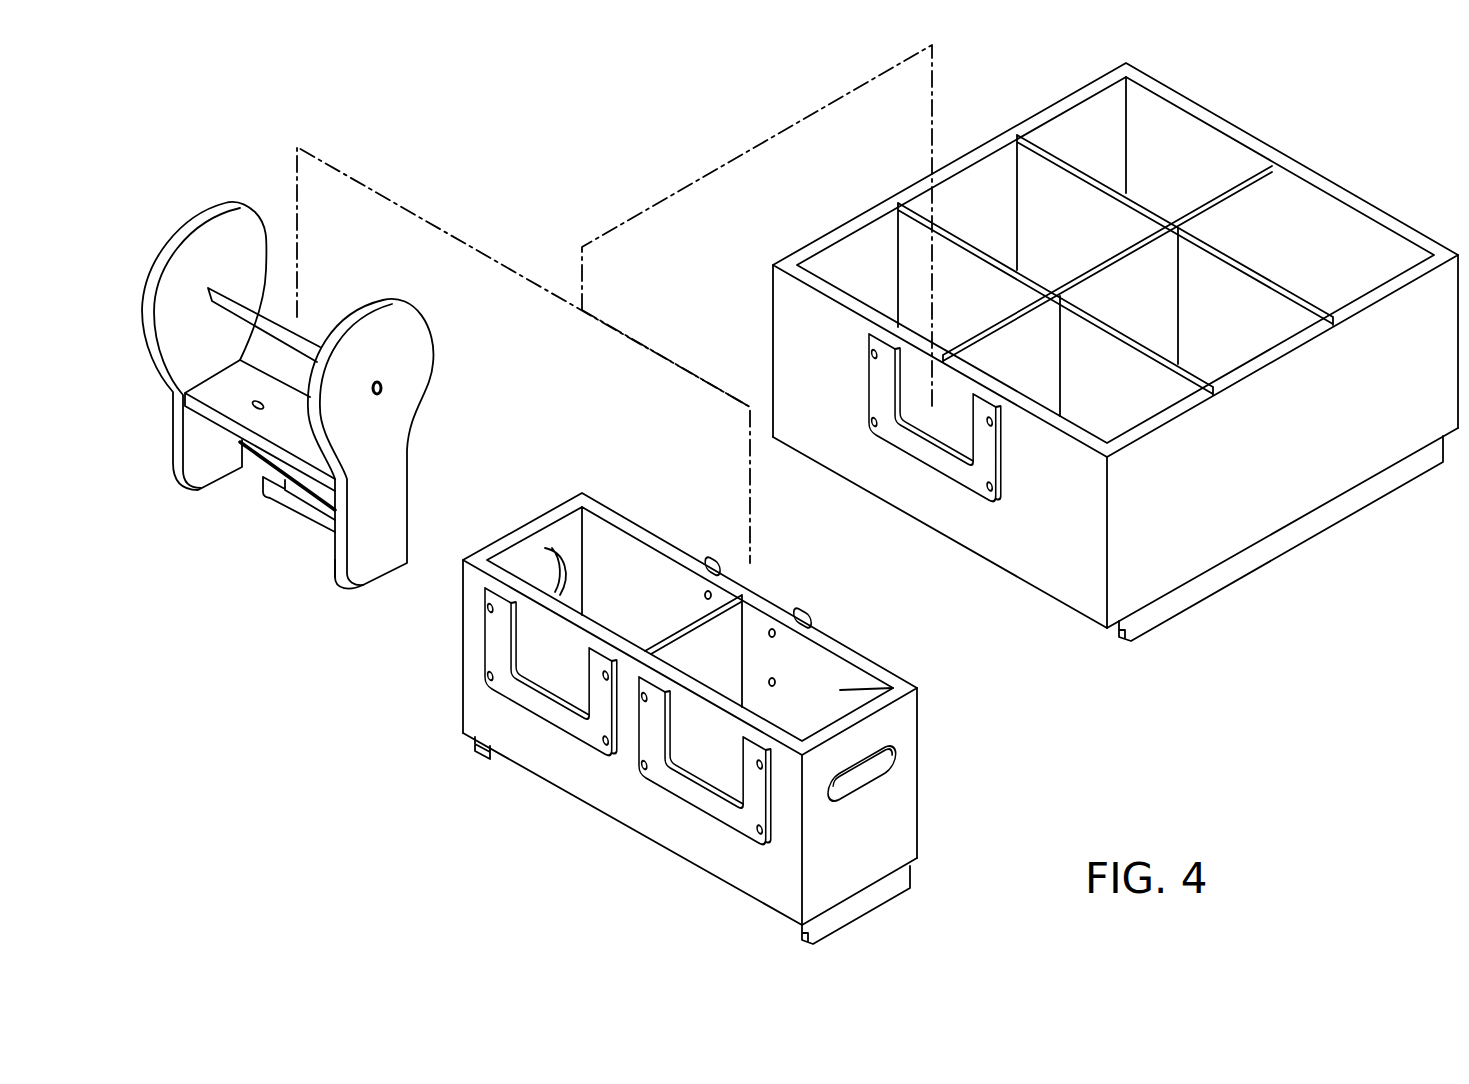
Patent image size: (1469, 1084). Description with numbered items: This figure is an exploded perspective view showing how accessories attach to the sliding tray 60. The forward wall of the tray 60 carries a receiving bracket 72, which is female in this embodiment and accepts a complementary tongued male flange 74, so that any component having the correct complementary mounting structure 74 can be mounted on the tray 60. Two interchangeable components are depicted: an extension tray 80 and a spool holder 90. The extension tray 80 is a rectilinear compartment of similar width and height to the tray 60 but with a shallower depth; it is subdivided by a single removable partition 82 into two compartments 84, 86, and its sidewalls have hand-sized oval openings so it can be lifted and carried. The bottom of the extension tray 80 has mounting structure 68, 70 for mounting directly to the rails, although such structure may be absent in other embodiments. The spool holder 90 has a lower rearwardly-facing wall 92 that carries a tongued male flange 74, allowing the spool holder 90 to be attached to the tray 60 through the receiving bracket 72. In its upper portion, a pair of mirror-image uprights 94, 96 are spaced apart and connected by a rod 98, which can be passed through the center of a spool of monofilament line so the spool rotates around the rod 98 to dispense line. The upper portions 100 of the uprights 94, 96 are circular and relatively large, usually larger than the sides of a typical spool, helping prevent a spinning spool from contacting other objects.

The tray 60 is at (1316, 160).
The mounting structure 68 is at (472, 743).
The mounting structure 70 is at (1202, 587).
The receiving bracket 72 is at (533, 700).
The tongued male flange 74 is at (772, 595).
The extension tray 80 is at (872, 655).
The removable partition 82 is at (727, 630).
The compartment 84 is at (576, 547).
The compartment 86 is at (860, 690).
The spool holder 90 is at (302, 417).
The rearwardly-facing wall 92 is at (293, 493).
The upright 94 is at (176, 430).
The upright 96 is at (336, 552).
The rod 98 is at (305, 345).
The upper portion 100 is at (185, 272).